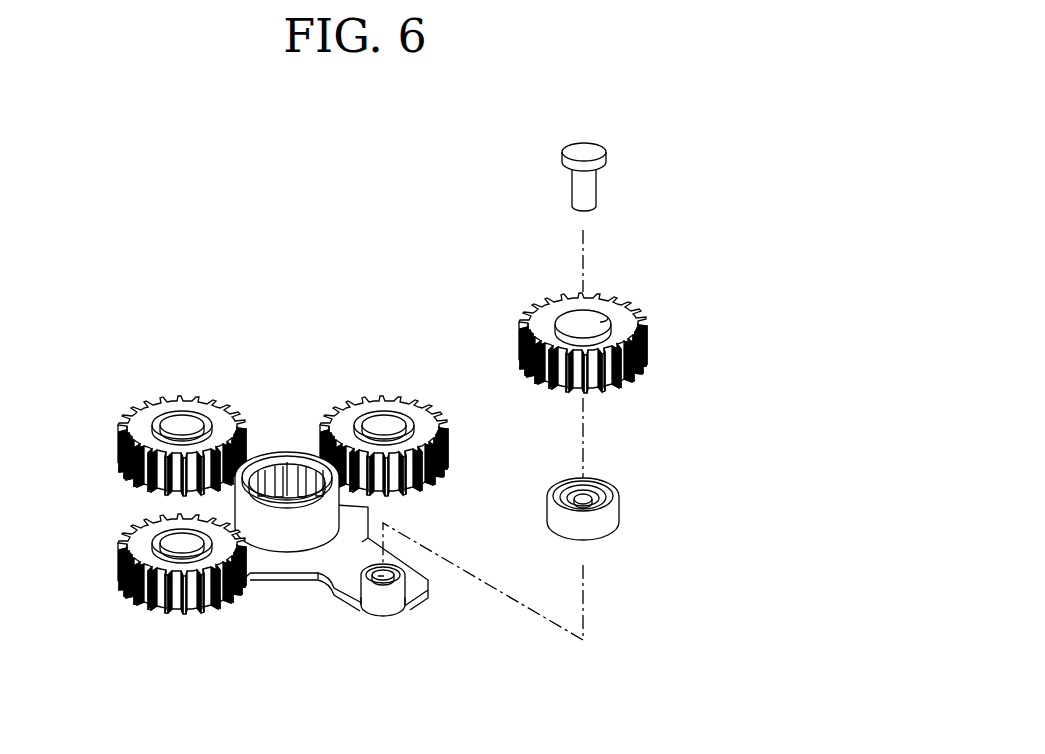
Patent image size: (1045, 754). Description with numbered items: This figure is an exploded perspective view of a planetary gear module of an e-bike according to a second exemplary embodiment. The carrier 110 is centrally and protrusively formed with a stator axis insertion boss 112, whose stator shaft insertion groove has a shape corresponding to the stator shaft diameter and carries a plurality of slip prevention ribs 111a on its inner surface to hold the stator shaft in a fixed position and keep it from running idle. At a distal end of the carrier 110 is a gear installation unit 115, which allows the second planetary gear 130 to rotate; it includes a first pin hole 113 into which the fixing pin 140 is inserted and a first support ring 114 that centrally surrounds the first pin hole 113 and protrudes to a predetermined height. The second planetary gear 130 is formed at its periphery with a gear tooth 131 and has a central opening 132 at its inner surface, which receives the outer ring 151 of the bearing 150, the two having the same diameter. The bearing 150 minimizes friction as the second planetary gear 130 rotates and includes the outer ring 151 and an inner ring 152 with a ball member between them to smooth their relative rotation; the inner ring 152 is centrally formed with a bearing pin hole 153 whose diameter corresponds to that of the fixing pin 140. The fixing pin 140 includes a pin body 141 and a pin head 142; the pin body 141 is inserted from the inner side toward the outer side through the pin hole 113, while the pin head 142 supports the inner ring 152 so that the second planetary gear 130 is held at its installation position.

The carrier 110 is at (332, 575).
The slip prevention ribs 111a is at (275, 478).
The stator axis insertion boss 112 is at (287, 505).
The first pin hole 113 is at (381, 578).
The first support ring 114 is at (398, 586).
The gear installation unit 115 is at (383, 634).
The second planetary gear 130 is at (649, 343).
The gear tooth 131 is at (645, 340).
The bore 132 is at (596, 323).
The fixing pin 140 is at (650, 178).
The pin body 141 is at (625, 193).
The pin head 142 is at (590, 153).
The bearing 150 is at (622, 500).
The outer ring 151 is at (617, 500).
The inner ring 152 is at (596, 485).
The bearing pin hole 153 is at (575, 496).